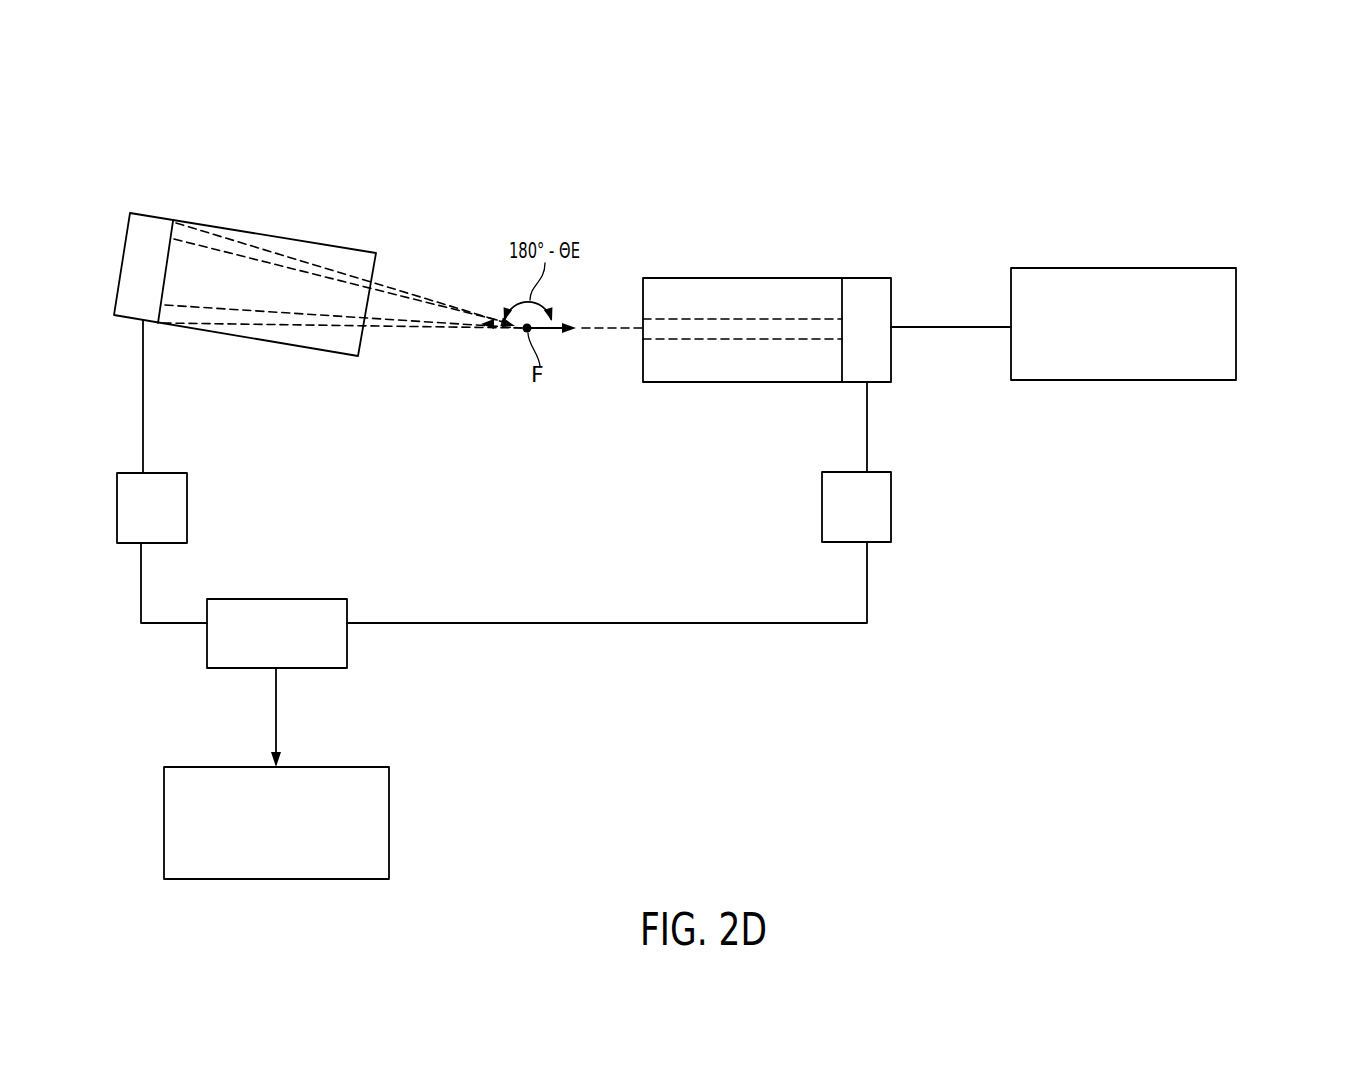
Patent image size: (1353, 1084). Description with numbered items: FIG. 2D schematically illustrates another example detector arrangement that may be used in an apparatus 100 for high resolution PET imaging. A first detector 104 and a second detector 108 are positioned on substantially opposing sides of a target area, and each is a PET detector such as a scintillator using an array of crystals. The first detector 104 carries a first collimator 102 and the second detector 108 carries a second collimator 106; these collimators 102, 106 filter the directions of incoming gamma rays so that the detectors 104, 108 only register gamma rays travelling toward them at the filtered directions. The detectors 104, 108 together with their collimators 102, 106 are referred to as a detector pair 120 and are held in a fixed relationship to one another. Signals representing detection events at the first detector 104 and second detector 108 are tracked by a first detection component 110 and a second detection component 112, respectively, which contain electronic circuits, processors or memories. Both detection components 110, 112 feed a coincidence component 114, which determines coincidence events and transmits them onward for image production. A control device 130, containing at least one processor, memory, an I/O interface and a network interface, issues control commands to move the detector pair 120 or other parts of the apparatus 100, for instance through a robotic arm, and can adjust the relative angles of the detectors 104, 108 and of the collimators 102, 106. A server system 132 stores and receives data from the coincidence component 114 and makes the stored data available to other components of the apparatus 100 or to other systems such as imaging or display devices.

The apparatus 100 is at (362, 172).
The first collimator 102 is at (761, 287).
The first detector 104 is at (877, 309).
The second collimator 106 is at (367, 257).
The second detector 108 is at (148, 230).
The first detection component 110 is at (877, 507).
The second detection component 112 is at (173, 507).
The coincidence component 114 is at (338, 614).
The detector pair 120 is at (153, 323).
The control device 130 is at (1223, 310).
The server system 132 is at (375, 810).